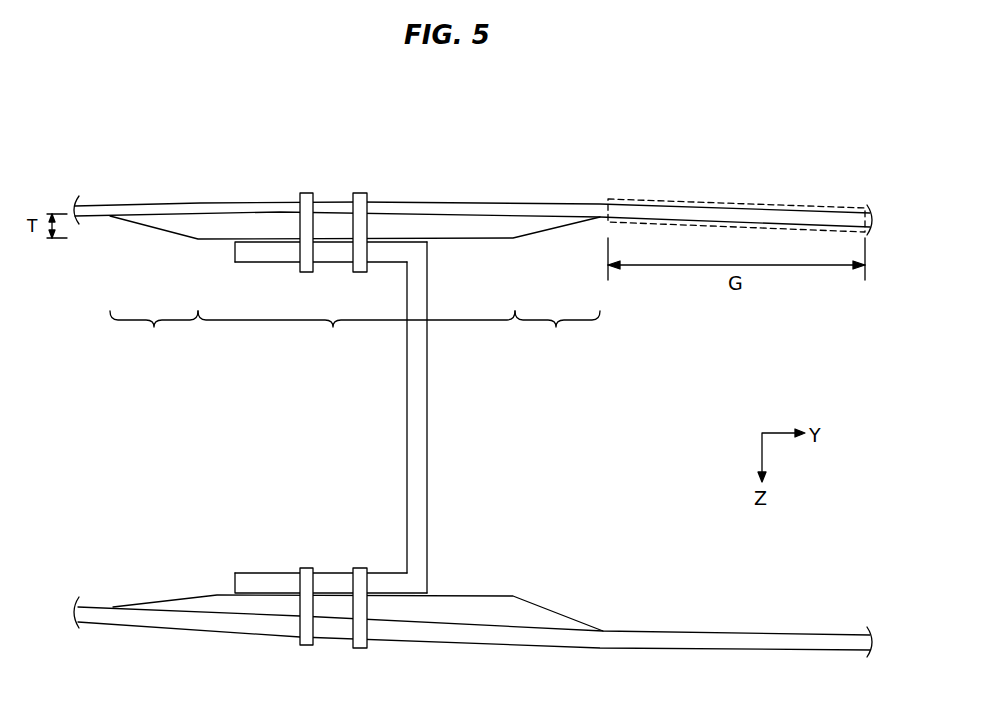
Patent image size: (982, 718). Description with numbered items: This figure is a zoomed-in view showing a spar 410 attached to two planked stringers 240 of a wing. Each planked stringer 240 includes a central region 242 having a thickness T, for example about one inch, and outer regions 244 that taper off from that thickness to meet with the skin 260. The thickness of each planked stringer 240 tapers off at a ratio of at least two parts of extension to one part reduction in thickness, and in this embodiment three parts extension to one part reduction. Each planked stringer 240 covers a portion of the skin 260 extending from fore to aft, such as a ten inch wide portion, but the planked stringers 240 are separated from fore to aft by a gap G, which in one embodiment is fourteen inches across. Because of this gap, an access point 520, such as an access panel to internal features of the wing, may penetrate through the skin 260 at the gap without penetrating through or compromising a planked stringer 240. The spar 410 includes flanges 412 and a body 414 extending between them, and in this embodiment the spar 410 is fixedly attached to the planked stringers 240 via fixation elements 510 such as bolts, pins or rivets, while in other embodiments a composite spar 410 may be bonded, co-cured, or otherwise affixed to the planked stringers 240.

The skin 260 is at (155, 203).
The planked stringer 240 is at (486, 240).
The central region 242 is at (356, 334).
The outer region 244 is at (355, 334).
The spar 410 is at (366, 417).
The flange 412 is at (235, 251).
The body 414 is at (428, 467).
The fixation element 510 is at (360, 197).
The access point 520 is at (780, 205).